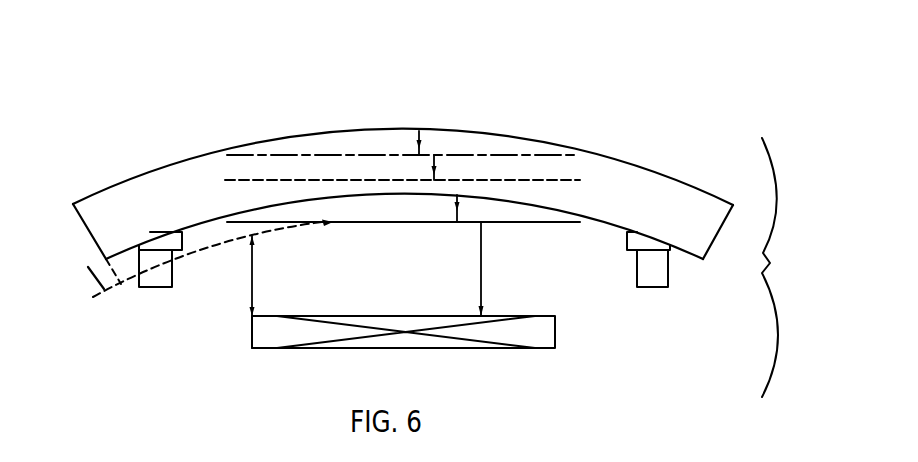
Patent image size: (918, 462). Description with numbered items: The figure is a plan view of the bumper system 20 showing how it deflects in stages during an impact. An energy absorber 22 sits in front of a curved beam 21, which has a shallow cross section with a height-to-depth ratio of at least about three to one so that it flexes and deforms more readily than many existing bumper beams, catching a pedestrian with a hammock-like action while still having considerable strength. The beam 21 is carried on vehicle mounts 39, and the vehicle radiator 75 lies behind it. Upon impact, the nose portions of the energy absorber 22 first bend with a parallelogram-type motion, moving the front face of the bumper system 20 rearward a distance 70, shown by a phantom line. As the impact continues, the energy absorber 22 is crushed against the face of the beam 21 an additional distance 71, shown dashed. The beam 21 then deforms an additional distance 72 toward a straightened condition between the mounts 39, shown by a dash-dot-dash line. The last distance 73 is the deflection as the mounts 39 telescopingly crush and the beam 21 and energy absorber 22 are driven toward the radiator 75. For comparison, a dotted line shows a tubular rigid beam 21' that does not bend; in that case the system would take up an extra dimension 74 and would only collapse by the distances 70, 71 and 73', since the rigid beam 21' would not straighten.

The bumper system 20 is at (163, 147).
The energy absorber 22 is at (195, 157).
The vehicle mounts 39 is at (154, 287).
The deflection distance 70 is at (419, 132).
The deflection distance 71 is at (434, 155).
The deflection distance 72 is at (480, 194).
The deflection distance 73 is at (507, 269).
The deflection distance 73' is at (281, 292).
The beam 21 is at (75, 291).
The tubular rigid beam 21' is at (213, 268).
The dimension 74 is at (97, 282).
The vehicle radiator 75 is at (252, 346).